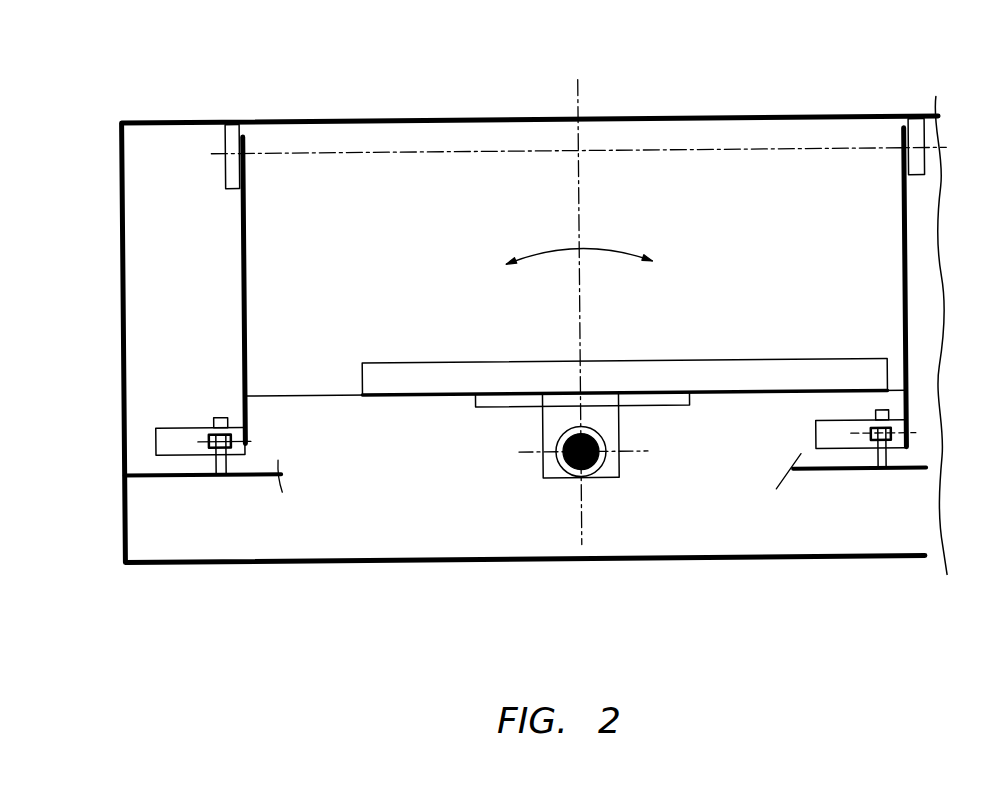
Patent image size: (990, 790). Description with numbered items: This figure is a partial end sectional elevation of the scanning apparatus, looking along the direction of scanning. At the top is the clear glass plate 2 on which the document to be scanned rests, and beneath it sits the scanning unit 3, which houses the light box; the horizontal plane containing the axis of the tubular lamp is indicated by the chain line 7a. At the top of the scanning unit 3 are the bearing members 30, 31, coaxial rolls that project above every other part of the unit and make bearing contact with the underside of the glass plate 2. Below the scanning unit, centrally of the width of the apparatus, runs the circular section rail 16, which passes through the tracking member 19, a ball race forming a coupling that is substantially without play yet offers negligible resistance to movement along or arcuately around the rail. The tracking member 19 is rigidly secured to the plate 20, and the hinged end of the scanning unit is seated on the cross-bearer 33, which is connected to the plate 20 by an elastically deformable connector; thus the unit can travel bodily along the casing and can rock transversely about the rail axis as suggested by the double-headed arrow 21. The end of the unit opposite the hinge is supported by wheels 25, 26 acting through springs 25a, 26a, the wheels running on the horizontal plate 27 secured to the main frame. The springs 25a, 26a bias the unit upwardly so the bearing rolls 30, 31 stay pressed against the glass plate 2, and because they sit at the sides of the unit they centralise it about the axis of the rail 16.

The glass plate 2 is at (413, 117).
The scanning unit 3 is at (242, 282).
The chain line 7a is at (717, 148).
The circular section rail 16 is at (563, 478).
The tracking member 19 is at (595, 475).
The plate 20 is at (513, 400).
The double-headed arrow 21 is at (580, 312).
The wheel 25 is at (222, 471).
The spring 25a is at (179, 443).
The wheel 26 is at (880, 473).
The spring 26a is at (833, 440).
The horizontal plate 27 is at (258, 480).
The bearing member 30 is at (237, 139).
The bearing member 31 is at (915, 132).
The cross-bearer 33 is at (408, 397).